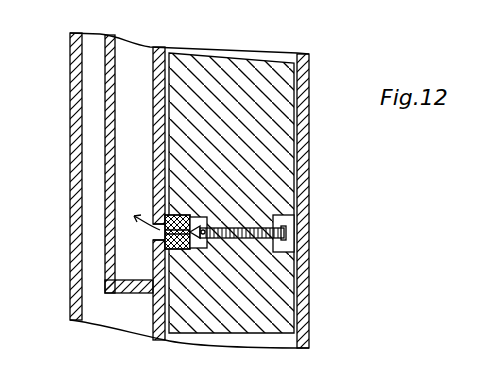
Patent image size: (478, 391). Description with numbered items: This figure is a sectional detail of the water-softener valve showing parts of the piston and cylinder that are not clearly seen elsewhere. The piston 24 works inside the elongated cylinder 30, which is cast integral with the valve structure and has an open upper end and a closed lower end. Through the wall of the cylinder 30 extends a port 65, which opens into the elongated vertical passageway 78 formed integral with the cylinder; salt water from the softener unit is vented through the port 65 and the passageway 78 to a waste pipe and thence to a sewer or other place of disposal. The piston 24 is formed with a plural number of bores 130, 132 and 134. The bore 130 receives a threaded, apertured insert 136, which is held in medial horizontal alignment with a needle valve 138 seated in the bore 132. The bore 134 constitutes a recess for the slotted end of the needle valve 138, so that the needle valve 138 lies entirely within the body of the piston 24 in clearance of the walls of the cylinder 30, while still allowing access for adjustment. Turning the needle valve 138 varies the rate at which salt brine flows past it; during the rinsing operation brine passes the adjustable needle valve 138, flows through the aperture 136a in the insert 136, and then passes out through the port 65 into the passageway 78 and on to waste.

The piston 24 is at (275, 117).
The cylinder 30 is at (303, 142).
The port 65 is at (155, 233).
The passageway 78 is at (130, 126).
The bore 130 is at (157, 293).
The bore 132 is at (273, 207).
The bore 134 is at (285, 222).
The apertured insert 136 is at (190, 232).
The aperture 136a is at (170, 218).
The needle valve 138 is at (287, 235).